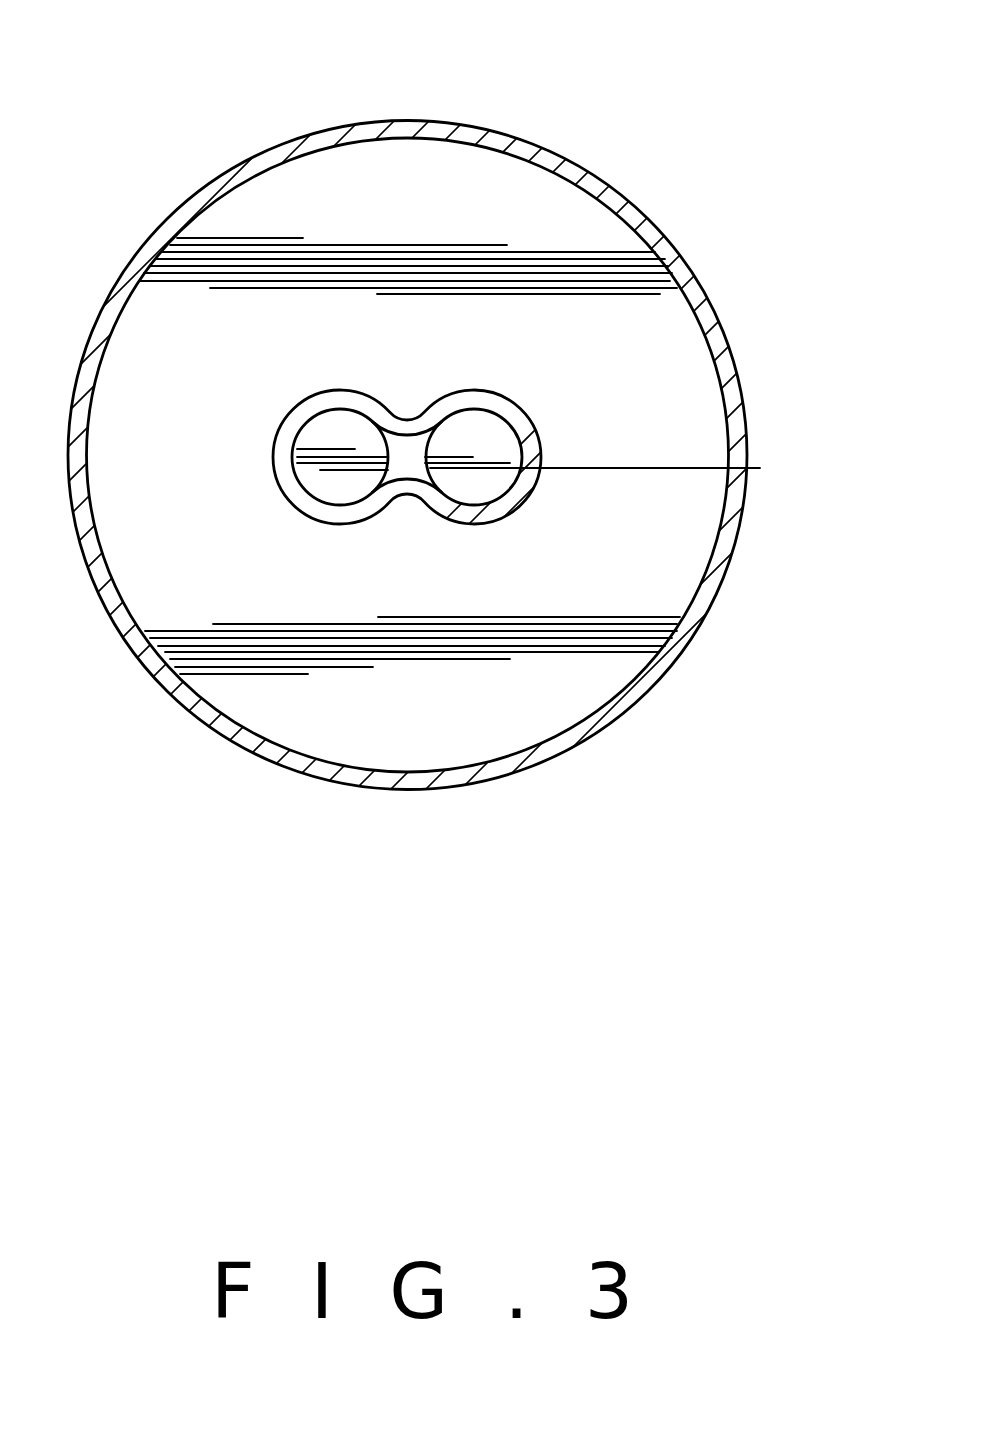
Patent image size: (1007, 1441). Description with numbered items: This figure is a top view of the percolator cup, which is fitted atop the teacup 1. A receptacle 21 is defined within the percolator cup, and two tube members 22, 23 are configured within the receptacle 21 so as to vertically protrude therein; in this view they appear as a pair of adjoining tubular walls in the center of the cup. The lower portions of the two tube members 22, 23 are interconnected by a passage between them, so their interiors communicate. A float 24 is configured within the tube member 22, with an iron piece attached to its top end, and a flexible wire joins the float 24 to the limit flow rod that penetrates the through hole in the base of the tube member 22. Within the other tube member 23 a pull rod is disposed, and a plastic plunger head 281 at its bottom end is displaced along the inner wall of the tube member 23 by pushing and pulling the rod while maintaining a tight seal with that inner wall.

The teacup 1 is at (703, 318).
The receptacle 21 is at (588, 312).
The tube member 22 is at (282, 450).
The tube member 23 is at (533, 430).
The float 24 is at (333, 453).
The plunger head 281 is at (643, 551).